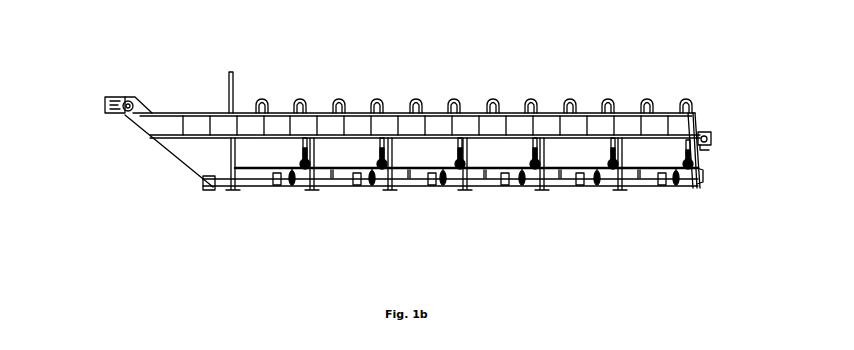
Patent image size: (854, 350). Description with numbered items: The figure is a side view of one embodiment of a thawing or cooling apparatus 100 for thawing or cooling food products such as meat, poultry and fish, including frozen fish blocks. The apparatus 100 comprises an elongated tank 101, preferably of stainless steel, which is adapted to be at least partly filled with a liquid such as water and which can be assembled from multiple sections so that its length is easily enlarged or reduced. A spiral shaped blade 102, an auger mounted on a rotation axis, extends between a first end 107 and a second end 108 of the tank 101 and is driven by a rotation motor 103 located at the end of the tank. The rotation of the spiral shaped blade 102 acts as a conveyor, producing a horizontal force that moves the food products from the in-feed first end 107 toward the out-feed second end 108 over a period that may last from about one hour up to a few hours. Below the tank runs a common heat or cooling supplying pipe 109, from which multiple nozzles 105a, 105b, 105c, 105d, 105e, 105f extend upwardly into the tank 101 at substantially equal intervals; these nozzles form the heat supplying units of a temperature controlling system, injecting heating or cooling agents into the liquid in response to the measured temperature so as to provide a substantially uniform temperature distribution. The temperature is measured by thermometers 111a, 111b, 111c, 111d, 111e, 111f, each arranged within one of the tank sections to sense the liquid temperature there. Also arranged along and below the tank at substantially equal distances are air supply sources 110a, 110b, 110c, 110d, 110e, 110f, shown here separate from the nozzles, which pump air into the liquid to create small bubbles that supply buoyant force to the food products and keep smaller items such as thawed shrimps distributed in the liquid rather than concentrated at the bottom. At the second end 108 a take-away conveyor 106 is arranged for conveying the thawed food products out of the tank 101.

The thawing or cooling apparatus 100 is at (491, 33).
The tank 101 is at (273, 125).
The spiral shaped blade 102 is at (221, 86).
The rotation motor 103 is at (712, 142).
The nozzle 105a is at (662, 190).
The nozzle 105b is at (580, 190).
The nozzle 105c is at (505, 190).
The nozzle 105d is at (431, 190).
The nozzle 105e is at (355, 190).
The nozzle 105f is at (276, 190).
The take-away conveyor 106 is at (138, 98).
The first end 107 is at (724, 127).
The second end 108 is at (113, 139).
The heat or cooling supplying pipe 109 is at (688, 192).
The air supply source 110a is at (676, 168).
The air supply source 110b is at (597, 168).
The air supply source 110c is at (522, 168).
The air supply source 110d is at (443, 168).
The air supply source 110e is at (372, 168).
The air supply source 110f is at (292, 168).
The thermometer 111a is at (688, 138).
The thermometer 111b is at (613, 136).
The thermometer 111c is at (535, 136).
The thermometer 111d is at (460, 136).
The thermometer 111e is at (382, 136).
The thermometer 111f is at (305, 136).